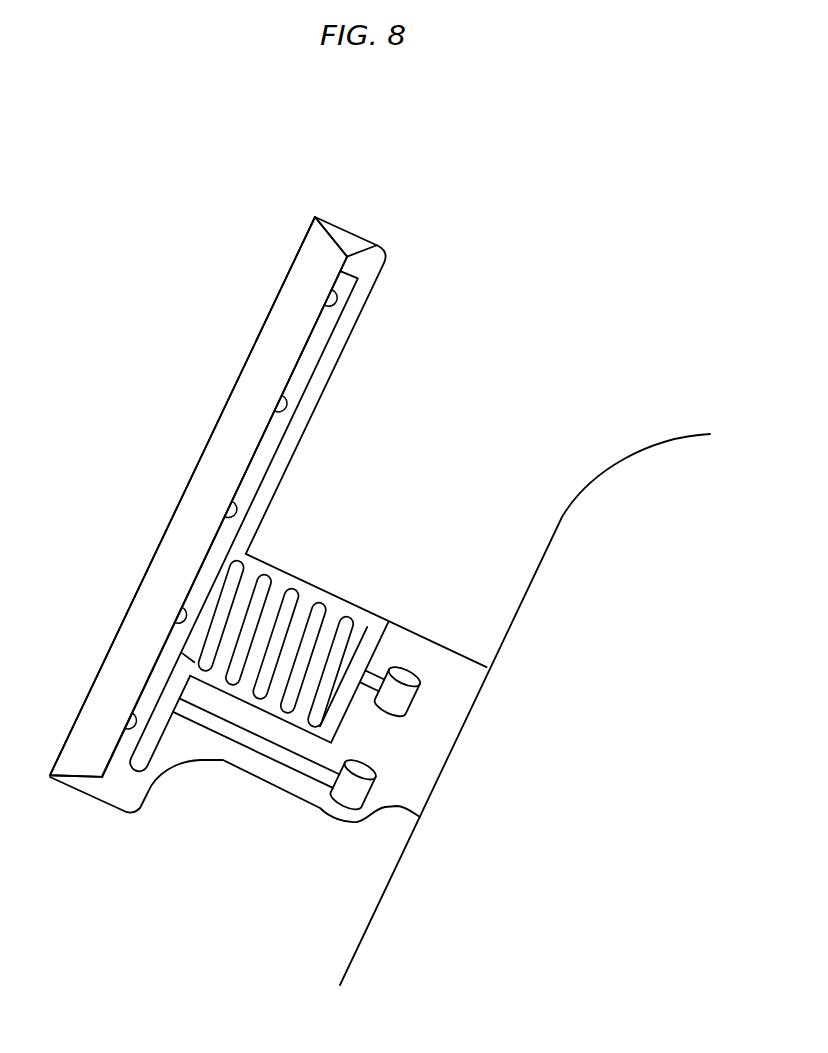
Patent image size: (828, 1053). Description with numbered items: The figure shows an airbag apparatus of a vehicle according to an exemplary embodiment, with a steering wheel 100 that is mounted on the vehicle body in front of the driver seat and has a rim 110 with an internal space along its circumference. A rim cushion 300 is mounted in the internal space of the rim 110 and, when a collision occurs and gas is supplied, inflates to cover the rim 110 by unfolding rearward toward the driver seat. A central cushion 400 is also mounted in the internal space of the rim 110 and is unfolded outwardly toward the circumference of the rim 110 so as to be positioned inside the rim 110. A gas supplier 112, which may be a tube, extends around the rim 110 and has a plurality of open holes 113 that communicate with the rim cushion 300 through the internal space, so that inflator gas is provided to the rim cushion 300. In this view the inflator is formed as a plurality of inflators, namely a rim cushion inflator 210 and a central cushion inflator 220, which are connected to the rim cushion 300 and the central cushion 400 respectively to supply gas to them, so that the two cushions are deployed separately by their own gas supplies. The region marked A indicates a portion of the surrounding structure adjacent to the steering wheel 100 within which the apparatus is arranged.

The steering wheel 100 is at (326, 210).
The rim 110 is at (387, 257).
The gas supplier 112 is at (183, 677).
The open holes 113 is at (282, 405).
The rim cushion 300 is at (158, 547).
The central cushion 400 is at (290, 716).
The rim cushion inflator 210 is at (410, 702).
The central cushion inflator 220 is at (362, 790).
The housing region A is at (523, 593).